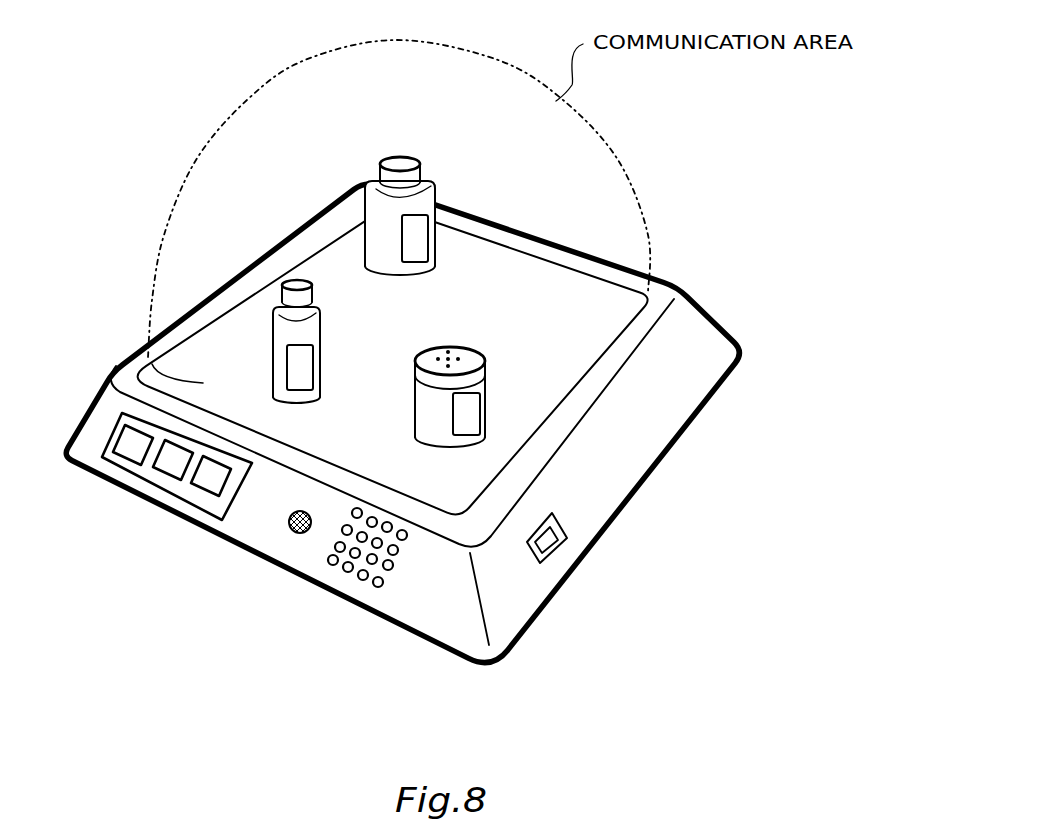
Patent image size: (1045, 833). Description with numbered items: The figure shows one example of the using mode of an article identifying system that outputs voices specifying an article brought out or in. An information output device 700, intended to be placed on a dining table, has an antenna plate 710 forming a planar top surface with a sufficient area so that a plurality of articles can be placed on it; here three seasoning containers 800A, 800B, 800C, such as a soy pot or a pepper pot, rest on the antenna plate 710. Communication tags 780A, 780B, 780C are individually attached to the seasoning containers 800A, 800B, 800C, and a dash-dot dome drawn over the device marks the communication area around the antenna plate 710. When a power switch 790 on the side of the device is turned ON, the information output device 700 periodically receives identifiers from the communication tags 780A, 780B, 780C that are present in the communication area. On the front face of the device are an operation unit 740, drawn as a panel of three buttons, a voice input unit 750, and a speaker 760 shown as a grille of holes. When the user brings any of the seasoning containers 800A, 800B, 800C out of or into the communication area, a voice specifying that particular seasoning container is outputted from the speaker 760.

The information output device 700 is at (691, 386).
The antenna plate 710 is at (137, 352).
The operation unit 740 is at (170, 487).
The voice input unit 750 is at (298, 534).
The speaker 760 is at (363, 580).
The power switch 790 is at (555, 552).
The seasoning container 800A is at (461, 181).
The seasoning container 800B is at (245, 326).
The seasoning container 800C is at (497, 368).
The communication tag 780A is at (417, 223).
The communication tag 780B is at (310, 380).
The communication tag 780C is at (468, 417).